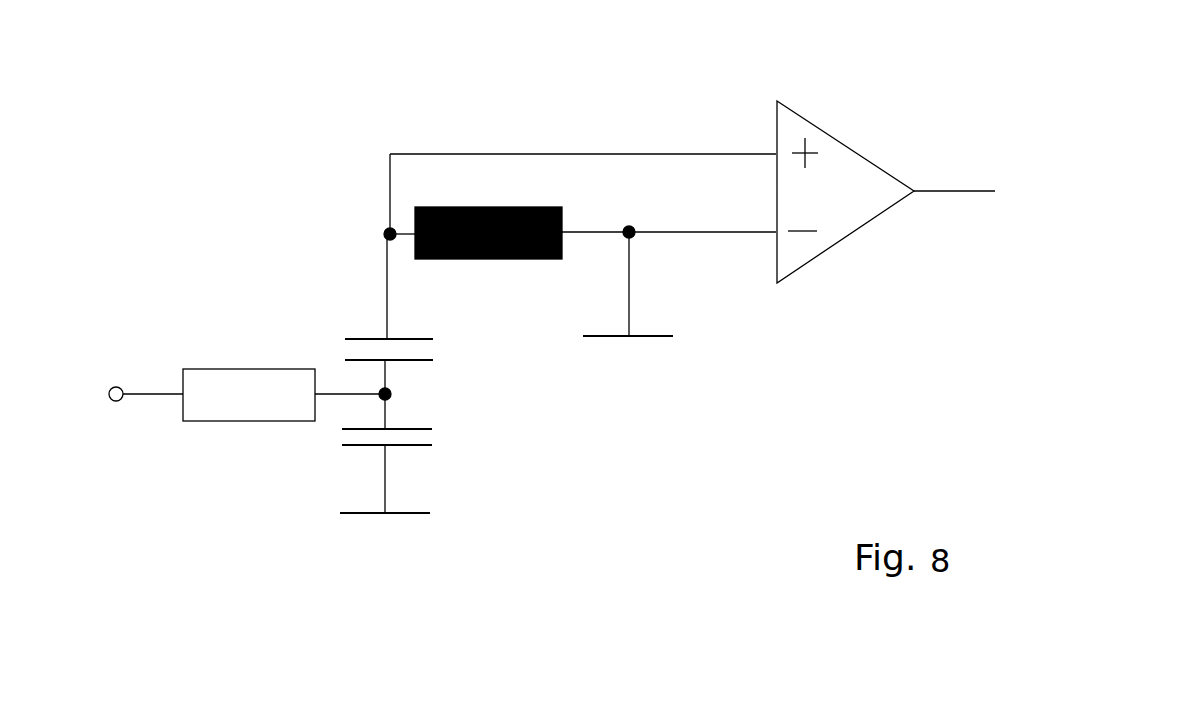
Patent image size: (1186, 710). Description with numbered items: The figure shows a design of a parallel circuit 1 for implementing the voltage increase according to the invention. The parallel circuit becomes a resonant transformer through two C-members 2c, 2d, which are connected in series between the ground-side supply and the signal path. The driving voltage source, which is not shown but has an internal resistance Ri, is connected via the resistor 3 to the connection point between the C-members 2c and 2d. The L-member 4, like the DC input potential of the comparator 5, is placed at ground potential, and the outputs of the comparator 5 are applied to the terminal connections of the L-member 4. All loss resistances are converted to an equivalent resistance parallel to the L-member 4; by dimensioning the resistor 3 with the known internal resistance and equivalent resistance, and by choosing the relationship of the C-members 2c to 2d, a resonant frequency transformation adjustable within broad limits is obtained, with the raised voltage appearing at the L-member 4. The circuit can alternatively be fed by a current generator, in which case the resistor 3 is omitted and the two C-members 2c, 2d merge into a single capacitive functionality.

The circuit arrangement 1 is at (500, 87).
The C-member 2c is at (414, 311).
The C-member 2d is at (412, 456).
The resistor 3 is at (255, 387).
The L-member 4 is at (507, 207).
The comparator 5 is at (826, 130).